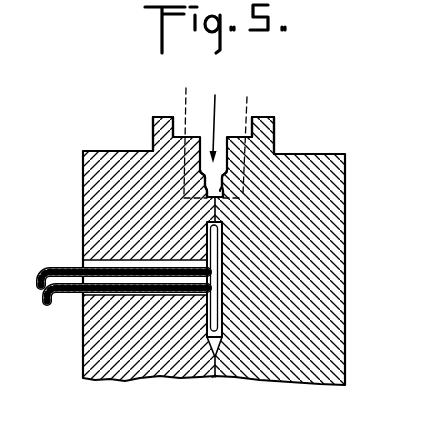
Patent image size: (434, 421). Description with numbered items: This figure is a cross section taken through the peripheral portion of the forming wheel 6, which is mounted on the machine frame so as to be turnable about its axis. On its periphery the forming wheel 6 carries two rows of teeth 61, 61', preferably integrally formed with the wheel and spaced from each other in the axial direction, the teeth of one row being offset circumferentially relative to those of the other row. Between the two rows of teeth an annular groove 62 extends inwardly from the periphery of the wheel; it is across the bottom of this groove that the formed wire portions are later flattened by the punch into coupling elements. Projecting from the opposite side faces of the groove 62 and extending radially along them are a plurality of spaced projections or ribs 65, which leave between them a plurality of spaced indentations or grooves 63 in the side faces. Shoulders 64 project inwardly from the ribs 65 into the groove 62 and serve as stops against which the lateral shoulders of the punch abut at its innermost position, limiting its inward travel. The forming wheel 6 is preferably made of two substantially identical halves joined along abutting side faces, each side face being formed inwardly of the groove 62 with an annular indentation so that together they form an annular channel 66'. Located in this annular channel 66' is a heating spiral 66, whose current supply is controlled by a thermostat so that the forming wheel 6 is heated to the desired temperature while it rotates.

The forming wheel 6 is at (345, 214).
The row of teeth 61 is at (156, 111).
The row of teeth 61' is at (283, 112).
The annular groove 62 is at (215, 117).
The indentations or grooves 63 is at (219, 132).
The shoulders 64 is at (200, 172).
The projections or ribs 65 is at (223, 170).
The heating spiral 66 is at (295, 279).
The annular channel 66' is at (201, 373).